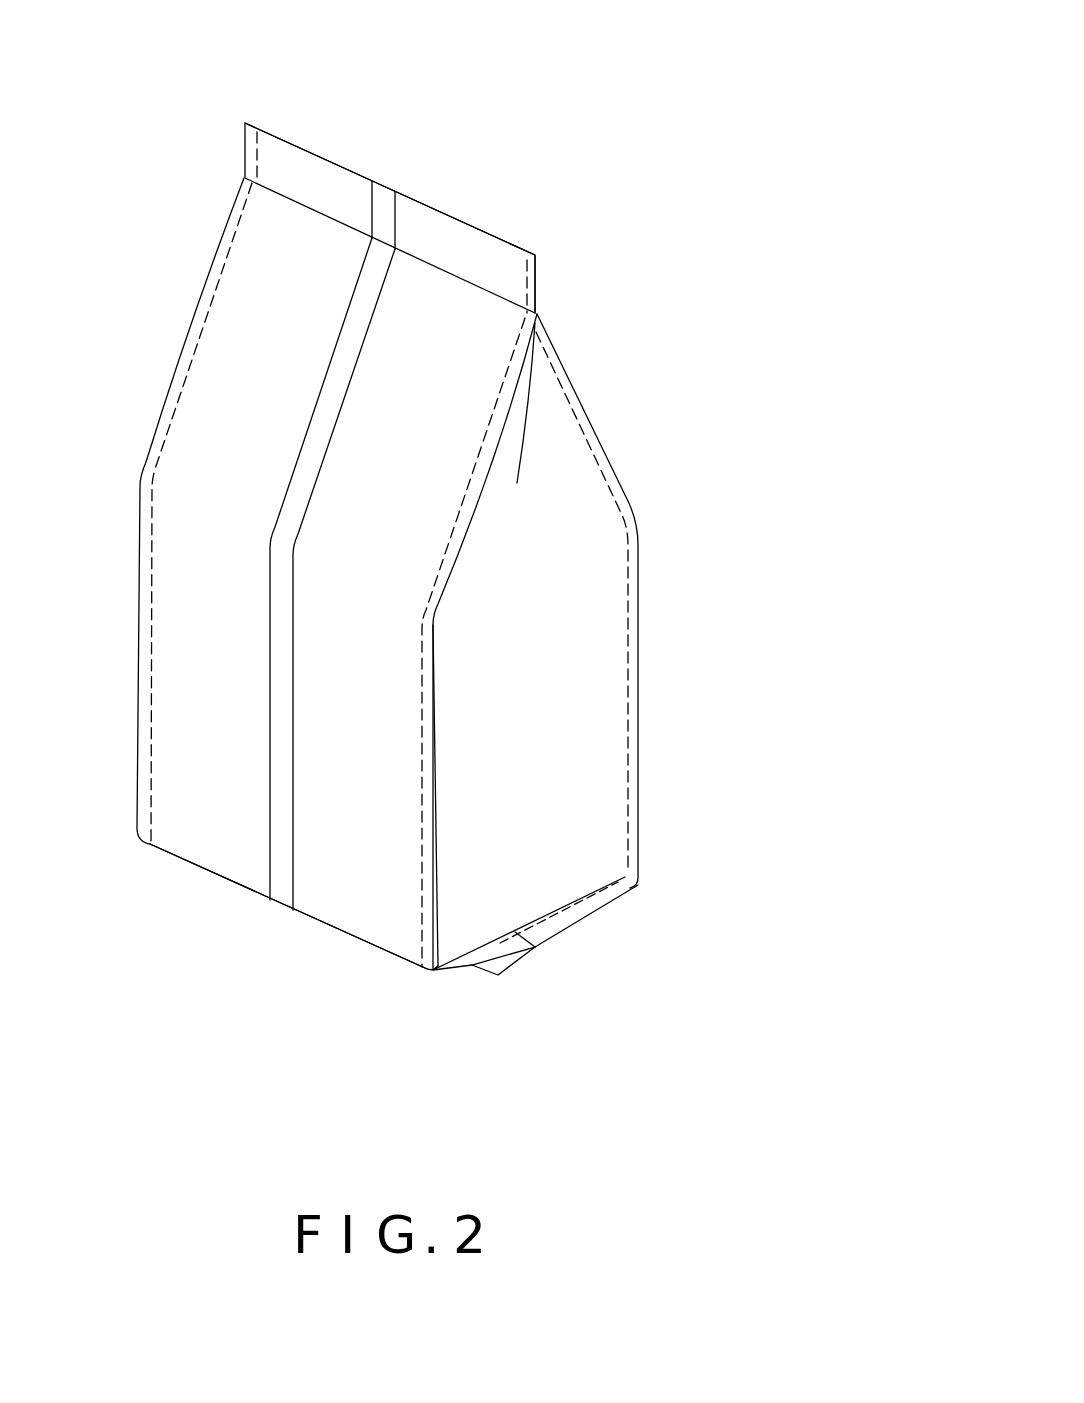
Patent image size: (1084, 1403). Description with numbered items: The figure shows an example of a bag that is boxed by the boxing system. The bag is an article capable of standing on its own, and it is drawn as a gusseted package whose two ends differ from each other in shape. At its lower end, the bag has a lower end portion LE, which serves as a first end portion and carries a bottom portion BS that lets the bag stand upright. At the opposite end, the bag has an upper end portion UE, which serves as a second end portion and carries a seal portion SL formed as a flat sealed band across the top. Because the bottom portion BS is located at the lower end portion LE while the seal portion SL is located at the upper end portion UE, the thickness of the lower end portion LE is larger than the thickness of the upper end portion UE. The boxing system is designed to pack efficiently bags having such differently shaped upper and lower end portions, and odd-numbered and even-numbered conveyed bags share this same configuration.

The seal portion SL is at (278, 168).
The upper end portion UE is at (437, 192).
The lower end portion LE is at (228, 902).
The bottom portion BS is at (545, 957).